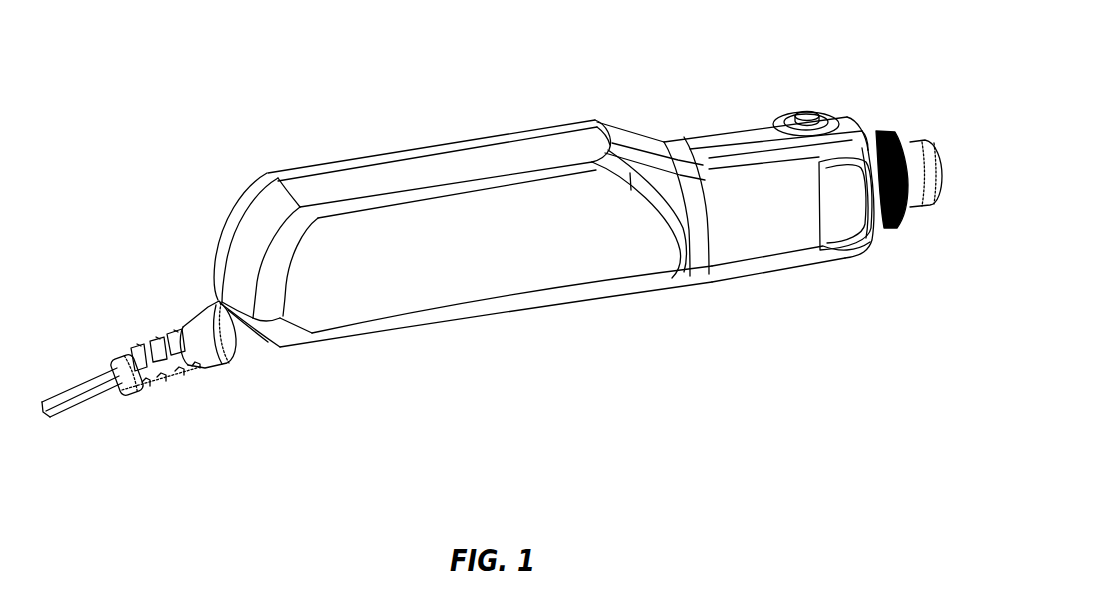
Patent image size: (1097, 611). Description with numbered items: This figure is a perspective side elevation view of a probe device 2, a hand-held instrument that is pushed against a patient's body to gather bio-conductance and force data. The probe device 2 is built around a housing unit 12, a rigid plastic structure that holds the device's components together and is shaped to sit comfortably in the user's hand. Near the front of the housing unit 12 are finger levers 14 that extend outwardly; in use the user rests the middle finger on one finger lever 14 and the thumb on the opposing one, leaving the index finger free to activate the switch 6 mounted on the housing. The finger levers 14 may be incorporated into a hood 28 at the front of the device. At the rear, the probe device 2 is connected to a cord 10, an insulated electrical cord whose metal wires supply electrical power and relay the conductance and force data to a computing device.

The probe device 2 is at (494, 258).
The switch 6 is at (800, 110).
The cord 10 is at (72, 397).
The housing unit 12 is at (561, 223).
The finger levers 14 is at (850, 212).
The hood 28 is at (928, 182).